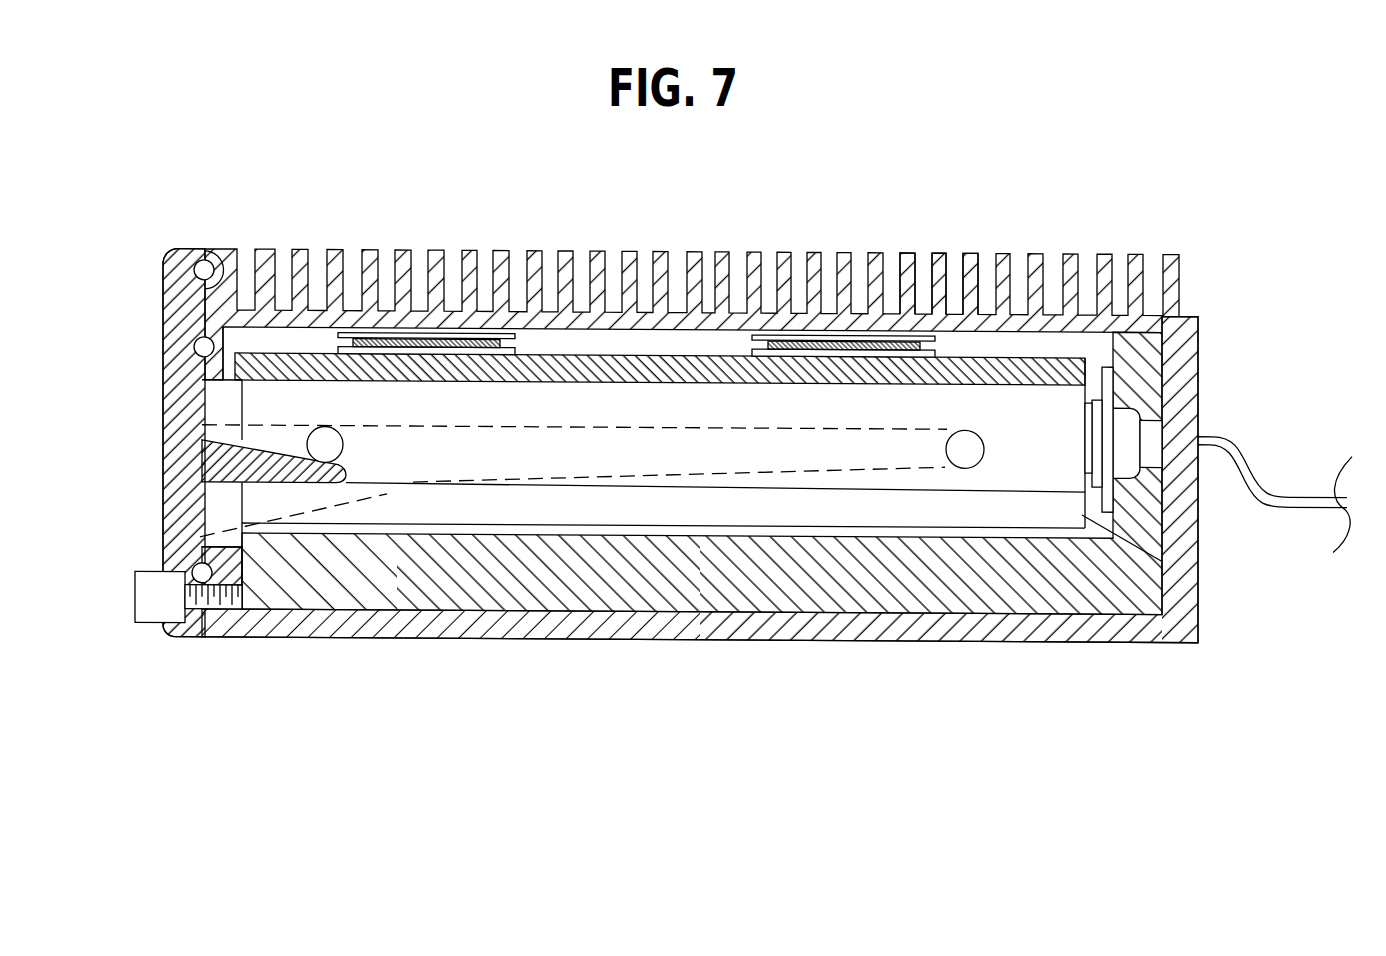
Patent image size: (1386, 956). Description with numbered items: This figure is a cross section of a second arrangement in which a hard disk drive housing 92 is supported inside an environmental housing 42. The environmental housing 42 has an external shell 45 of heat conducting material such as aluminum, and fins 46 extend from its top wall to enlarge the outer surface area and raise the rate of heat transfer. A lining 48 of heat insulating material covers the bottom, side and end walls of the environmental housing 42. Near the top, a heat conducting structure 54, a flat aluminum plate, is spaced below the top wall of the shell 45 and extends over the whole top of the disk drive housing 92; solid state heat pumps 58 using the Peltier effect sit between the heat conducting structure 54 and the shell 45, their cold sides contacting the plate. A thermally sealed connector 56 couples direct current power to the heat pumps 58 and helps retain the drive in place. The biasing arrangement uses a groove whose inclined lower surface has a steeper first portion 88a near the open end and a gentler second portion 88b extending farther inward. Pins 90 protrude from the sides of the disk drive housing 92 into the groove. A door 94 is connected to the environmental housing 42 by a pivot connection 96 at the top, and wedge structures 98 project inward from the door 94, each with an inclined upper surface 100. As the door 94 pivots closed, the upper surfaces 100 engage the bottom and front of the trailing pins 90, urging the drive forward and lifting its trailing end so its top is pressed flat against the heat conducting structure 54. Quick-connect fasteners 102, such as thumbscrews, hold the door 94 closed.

The environmental housing 42 is at (1204, 331).
The external shell 45 is at (1053, 309).
The fins 46 is at (968, 249).
The lining 48 is at (1155, 518).
The heat conducting structure 54 is at (833, 372).
The thermally sealed connector 56 is at (1100, 438).
The solid state heat pump 58 is at (522, 341).
The first portion of the lower surface 88a is at (310, 513).
The second portion of the lower surface 88b is at (685, 475).
The pins 90 is at (343, 443).
The disk drive housing 92 is at (233, 407).
The door 94 is at (172, 290).
The pivot connection 96 is at (188, 248).
The wedge structures 98 is at (348, 481).
The inclined upper surface 100 is at (283, 455).
The quick-connect fasteners 102 is at (145, 599).